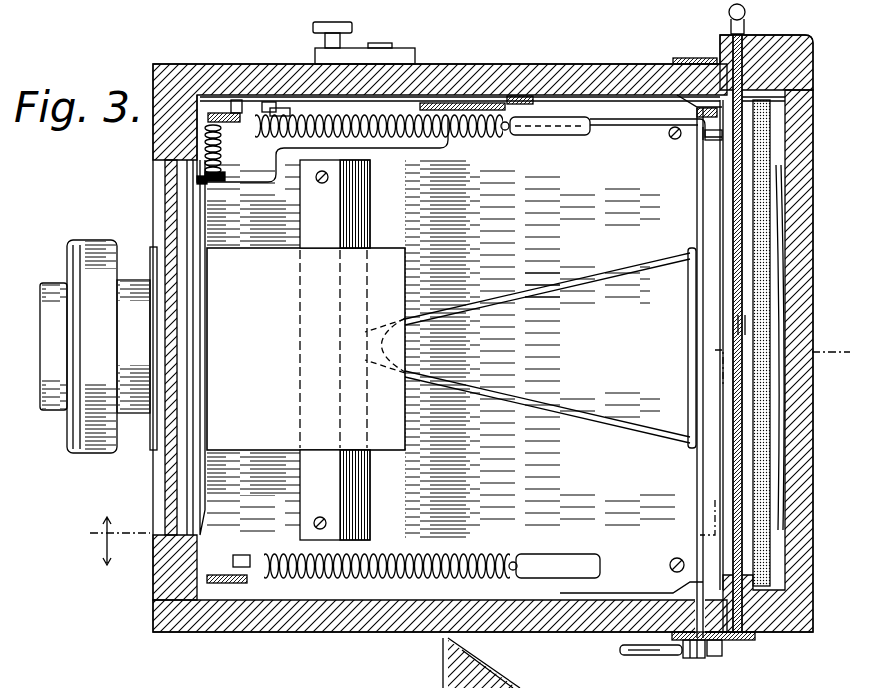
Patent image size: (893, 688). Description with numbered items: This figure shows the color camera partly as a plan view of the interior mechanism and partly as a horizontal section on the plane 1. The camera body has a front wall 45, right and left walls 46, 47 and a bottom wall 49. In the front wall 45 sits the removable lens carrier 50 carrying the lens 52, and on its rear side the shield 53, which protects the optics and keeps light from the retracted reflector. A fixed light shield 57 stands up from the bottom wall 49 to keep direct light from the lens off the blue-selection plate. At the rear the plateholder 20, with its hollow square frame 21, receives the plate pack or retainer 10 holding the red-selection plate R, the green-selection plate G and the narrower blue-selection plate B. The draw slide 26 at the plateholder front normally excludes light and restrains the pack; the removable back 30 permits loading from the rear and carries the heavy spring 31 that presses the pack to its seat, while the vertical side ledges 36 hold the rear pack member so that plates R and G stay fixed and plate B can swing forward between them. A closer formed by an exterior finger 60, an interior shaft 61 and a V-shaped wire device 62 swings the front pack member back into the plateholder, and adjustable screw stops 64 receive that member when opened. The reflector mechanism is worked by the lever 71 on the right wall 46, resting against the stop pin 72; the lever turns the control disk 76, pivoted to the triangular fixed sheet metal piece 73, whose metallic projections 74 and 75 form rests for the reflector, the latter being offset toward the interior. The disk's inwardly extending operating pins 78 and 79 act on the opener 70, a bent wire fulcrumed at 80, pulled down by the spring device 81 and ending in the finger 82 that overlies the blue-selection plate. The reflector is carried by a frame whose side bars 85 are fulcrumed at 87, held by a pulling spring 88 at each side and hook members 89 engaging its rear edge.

The section plane 1 is at (462, 458).
The retainer 10 is at (760, 325).
The plateholder 20 is at (498, 333).
The hollow square frame 21 is at (768, 53).
The draw slide 26 is at (731, 14).
The removable back 30 is at (805, 436).
The heavy spring 31 is at (775, 263).
The vertical side ledges 36 is at (745, 108).
The front wall 45 is at (167, 568).
The right wall 46 is at (595, 66).
The left wall 47 is at (563, 623).
The bottom wall 49 is at (547, 423).
The lens carrier 50 is at (160, 487).
The lens 52 is at (83, 427).
The shield 53 is at (306, 349).
The fixed light shield 57 is at (358, 497).
The finger 60 is at (665, 655).
The interior shaft 61 is at (700, 142).
The V-shaped wire device 62 is at (547, 289).
The adjustable screw stops 64 is at (669, 136).
The opener 70 is at (628, 124).
The lever 71 is at (352, 28).
The stop pin 72 is at (278, 108).
The triangular fixed sheet metal piece 73 is at (475, 100).
The metallic projection 74 is at (528, 98).
The metallic projection 75 is at (692, 92).
The control disk 76 is at (240, 100).
The operating pin 78 is at (470, 139).
The operating pin 79 is at (290, 160).
The fulcrum 80 is at (213, 183).
The spring device 81 is at (222, 153).
The finger 82 is at (716, 138).
The side bars 85 is at (219, 113).
The fulcrum 87 is at (270, 102).
The pulling spring 88 is at (412, 120).
The hook members 89 is at (568, 136).
The blue-selection plate B is at (730, 441).
The green-selection plate G is at (757, 266).
The red-selection plate R is at (778, 209).